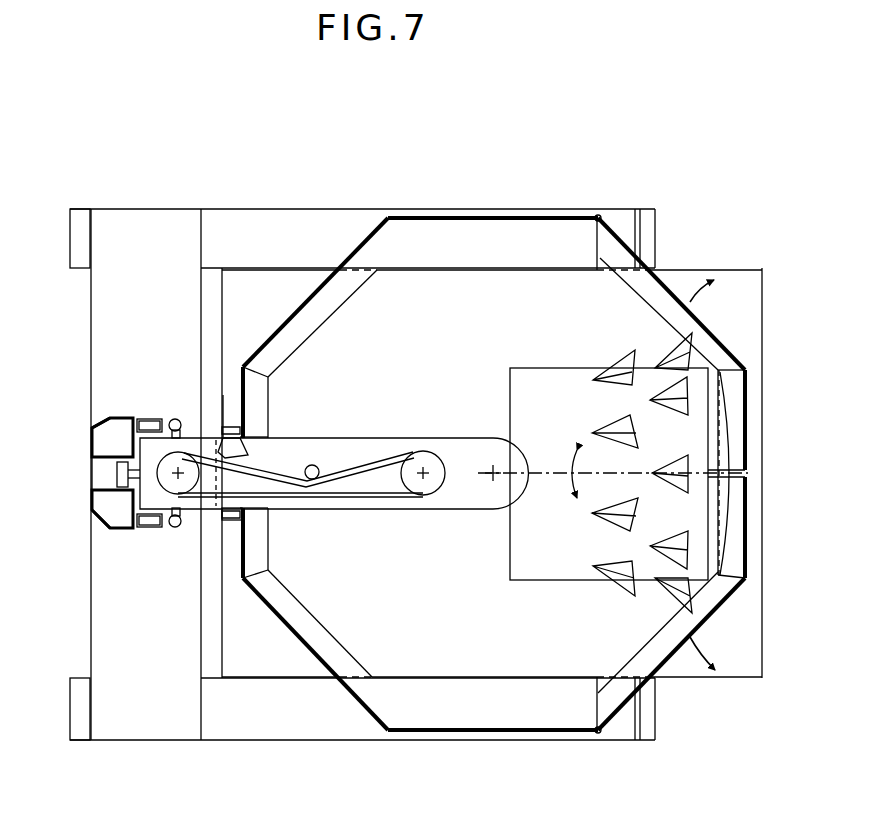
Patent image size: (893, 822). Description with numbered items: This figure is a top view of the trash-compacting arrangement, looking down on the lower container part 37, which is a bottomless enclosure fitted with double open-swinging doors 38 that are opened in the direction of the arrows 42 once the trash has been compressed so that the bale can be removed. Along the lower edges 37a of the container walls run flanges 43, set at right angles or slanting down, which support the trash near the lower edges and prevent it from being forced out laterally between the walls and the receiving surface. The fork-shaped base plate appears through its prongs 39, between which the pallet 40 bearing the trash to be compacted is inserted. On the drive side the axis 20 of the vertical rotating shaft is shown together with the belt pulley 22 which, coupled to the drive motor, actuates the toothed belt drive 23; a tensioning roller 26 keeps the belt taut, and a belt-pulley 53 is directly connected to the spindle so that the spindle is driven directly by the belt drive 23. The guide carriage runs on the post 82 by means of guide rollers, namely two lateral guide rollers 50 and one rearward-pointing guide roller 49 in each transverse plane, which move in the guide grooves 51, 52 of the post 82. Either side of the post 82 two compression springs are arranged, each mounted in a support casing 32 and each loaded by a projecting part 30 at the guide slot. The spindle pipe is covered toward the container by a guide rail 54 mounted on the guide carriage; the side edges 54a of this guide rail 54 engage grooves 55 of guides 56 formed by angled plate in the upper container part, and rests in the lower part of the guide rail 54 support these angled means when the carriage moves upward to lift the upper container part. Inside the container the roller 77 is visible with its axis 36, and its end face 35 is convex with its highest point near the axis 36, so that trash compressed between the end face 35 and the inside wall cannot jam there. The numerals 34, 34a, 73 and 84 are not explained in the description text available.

The axis of the vertical rotating shaft 20 is at (490, 483).
The belt pulley 22 is at (426, 451).
The belt drive 23 is at (360, 500).
The tensioning roller 26 is at (313, 464).
The projecting part 30 is at (185, 430).
The support casing 32 is at (172, 419).
The prism elements 34 is at (625, 378).
The prism element 34a is at (692, 606).
The end face 35 is at (750, 440).
The axis of the roller 36 is at (556, 470).
The lower container part 37 is at (290, 318).
The lower edges of the container walls 37a is at (472, 219).
The double open-swinging doors 38 is at (681, 291).
The prongs 39 is at (355, 219).
The pallet 40 is at (756, 291).
The arrows 42 is at (705, 300).
The flanges 43 is at (376, 280).
The rearward-pointing guide roller 49 is at (117, 470).
The lateral guide rollers 50 is at (142, 418).
The guide groove 51 is at (117, 482).
The guide groove 52 is at (104, 422).
The belt-pulley 53 is at (214, 507).
The guide rail 54 is at (240, 450).
The side edges of the guide rail 54a is at (236, 432).
The grooves 55 is at (225, 426).
The guides 56 is at (228, 524).
The frame 73 is at (283, 207).
The roller 77 is at (555, 370).
The post 82 is at (100, 512).
The carriage 84 is at (356, 438).